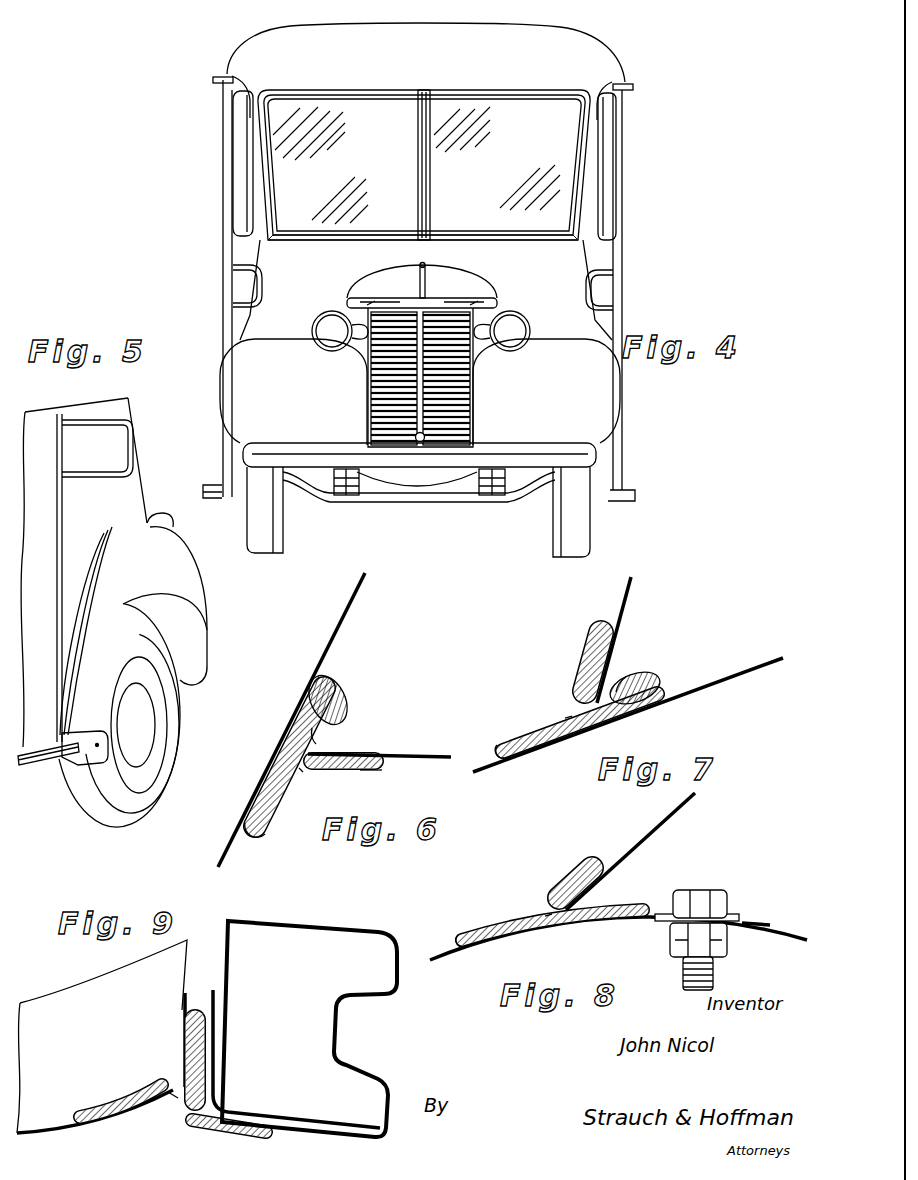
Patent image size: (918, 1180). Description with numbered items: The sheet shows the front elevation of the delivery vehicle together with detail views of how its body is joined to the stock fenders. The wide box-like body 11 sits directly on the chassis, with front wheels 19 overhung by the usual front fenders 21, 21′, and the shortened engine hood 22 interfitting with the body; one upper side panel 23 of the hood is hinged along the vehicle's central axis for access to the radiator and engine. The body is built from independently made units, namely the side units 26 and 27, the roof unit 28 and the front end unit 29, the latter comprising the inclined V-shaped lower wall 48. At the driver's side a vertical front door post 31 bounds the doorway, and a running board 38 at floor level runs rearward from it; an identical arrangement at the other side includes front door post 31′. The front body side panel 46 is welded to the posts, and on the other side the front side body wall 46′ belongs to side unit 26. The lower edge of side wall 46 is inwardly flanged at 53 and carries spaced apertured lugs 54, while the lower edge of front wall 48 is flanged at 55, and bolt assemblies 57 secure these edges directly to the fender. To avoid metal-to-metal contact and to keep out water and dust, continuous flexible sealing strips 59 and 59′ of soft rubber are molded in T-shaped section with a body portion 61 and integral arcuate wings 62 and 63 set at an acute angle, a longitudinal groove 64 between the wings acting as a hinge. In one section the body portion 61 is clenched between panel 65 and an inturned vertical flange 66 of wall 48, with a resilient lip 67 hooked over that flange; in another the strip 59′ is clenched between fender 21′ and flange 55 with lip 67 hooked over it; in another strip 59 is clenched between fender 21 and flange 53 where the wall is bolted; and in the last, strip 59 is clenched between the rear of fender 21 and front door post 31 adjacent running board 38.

In FIG. 4, the body 11 is at (238, 45).
In FIG. 4, the front wheels 19 is at (270, 538).
In FIG. 5, the front wheels 19 is at (162, 735).
In FIG. 4, the front fender 21 is at (597, 407).
In FIG. 8, the front fender 21 is at (575, 938).
In FIG. 9, the front fender 21 is at (102, 1036).
In FIG. 4, the front fender 21′ is at (241, 384).
In FIG. 5, the front fender 21′ is at (180, 590).
In FIG. 7, the front fender 21′ is at (715, 680).
In FIG. 4, the engine hood 22 is at (346, 284).
In FIG. 4, the upper side panel 23 is at (472, 286).
In FIG. 4, the side unit 26 is at (222, 207).
In FIG. 5, the side unit 26 is at (140, 444).
In FIG. 4, the side unit 27 is at (626, 172).
In FIG. 4, the roof unit 28 is at (576, 60).
In FIG. 4, the front end unit 29 is at (277, 257).
In FIG. 9, the front door post 31 is at (360, 906).
In FIG. 5, the front door post 31′ is at (57, 565).
In FIG. 4, the running board 38 is at (212, 498).
In FIG. 5, the running board 38 is at (46, 762).
In FIG. 8, the front body side panel 46 is at (644, 833).
In FIG. 5, the front side body wall 46′ is at (125, 495).
In FIG. 4, the lower wall 48 is at (527, 254).
In FIG. 6, the lower wall 48 is at (410, 752).
In FIG. 7, the lower wall 48 is at (612, 612).
In FIG. 8, the inward flange 53 is at (640, 912).
In FIG. 8, the apertured lugs 54 is at (758, 922).
In FIG. 7, the inward flange 55 is at (650, 672).
In FIG. 8, the bolt assembly 57 is at (705, 892).
In FIG. 6, the sealing strip 59 is at (390, 773).
In FIG. 5, the sealing strip 59′ is at (112, 532).
In FIG. 6, the body portion 61 is at (302, 712).
In FIG. 7, the body portion 61 is at (632, 712).
In FIG. 8, the body portion 61 is at (595, 915).
In FIG. 9, the body portion 61 is at (222, 1040).
In FIG. 6, the arcuate wing 62 is at (352, 770).
In FIG. 7, the arcuate wing 62 is at (588, 650).
In FIG. 8, the arcuate wing 62 is at (580, 873).
In FIG. 9, the arcuate wing 62 is at (265, 1136).
In FIG. 6, the arcuate wing 63 is at (252, 805).
In FIG. 7, the arcuate wing 63 is at (520, 725).
In FIG. 8, the arcuate wing 63 is at (495, 928).
In FIG. 9, the arcuate wing 63 is at (143, 1122).
In FIG. 6, the longitudinal groove 64 is at (297, 762).
In FIG. 7, the longitudinal groove 64 is at (560, 718).
In FIG. 8, the longitudinal groove 64 is at (540, 915).
In FIG. 9, the longitudinal groove 64 is at (175, 1118).
In FIG. 6, the panel 65 is at (312, 672).
In FIG. 6, the inturned vertical flange 66 is at (315, 732).
In FIG. 6, the resilient lip 67 is at (345, 700).
In FIG. 7, the resilient lip 67 is at (612, 680).